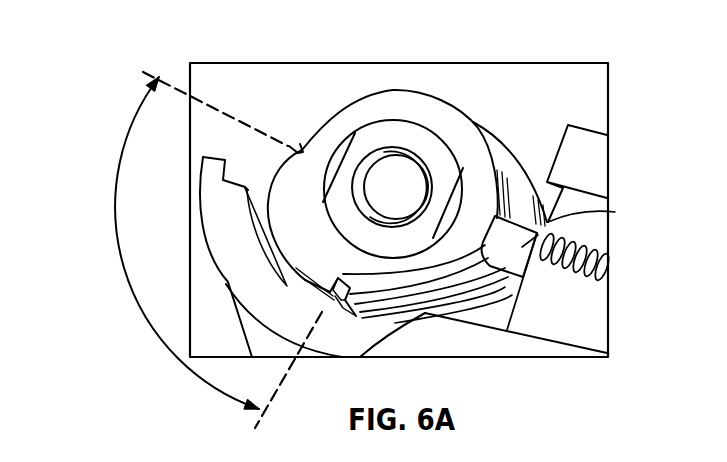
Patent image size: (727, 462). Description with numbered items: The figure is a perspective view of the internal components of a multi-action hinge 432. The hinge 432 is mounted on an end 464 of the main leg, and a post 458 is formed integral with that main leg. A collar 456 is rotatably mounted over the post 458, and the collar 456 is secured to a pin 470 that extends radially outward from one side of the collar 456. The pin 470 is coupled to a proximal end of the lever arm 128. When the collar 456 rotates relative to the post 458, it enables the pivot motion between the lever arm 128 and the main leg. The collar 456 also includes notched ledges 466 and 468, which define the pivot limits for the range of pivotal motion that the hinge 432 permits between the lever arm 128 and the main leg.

The multi-action hinge 432 is at (160, 42).
The collar 456 is at (402, 106).
The post 458 is at (392, 185).
The notched ledge 466 is at (298, 152).
The end of the main leg 464 is at (510, 157).
The notched ledge 468 is at (352, 315).
The lever arm 128 is at (588, 172).
The pin 470 is at (612, 212).